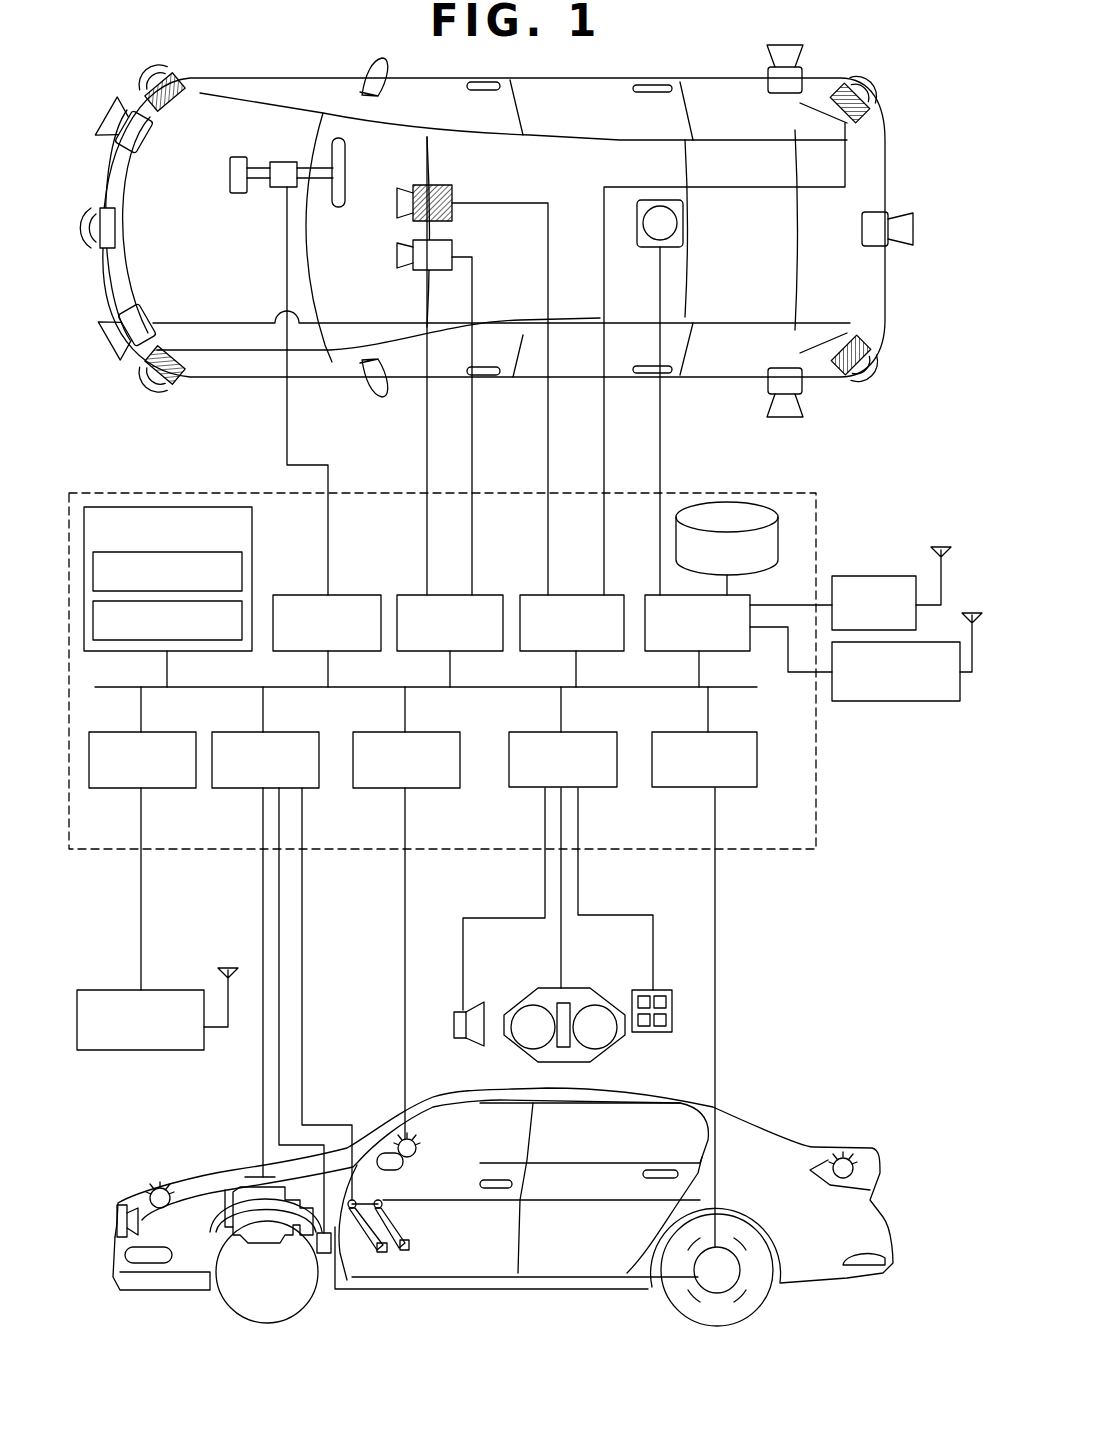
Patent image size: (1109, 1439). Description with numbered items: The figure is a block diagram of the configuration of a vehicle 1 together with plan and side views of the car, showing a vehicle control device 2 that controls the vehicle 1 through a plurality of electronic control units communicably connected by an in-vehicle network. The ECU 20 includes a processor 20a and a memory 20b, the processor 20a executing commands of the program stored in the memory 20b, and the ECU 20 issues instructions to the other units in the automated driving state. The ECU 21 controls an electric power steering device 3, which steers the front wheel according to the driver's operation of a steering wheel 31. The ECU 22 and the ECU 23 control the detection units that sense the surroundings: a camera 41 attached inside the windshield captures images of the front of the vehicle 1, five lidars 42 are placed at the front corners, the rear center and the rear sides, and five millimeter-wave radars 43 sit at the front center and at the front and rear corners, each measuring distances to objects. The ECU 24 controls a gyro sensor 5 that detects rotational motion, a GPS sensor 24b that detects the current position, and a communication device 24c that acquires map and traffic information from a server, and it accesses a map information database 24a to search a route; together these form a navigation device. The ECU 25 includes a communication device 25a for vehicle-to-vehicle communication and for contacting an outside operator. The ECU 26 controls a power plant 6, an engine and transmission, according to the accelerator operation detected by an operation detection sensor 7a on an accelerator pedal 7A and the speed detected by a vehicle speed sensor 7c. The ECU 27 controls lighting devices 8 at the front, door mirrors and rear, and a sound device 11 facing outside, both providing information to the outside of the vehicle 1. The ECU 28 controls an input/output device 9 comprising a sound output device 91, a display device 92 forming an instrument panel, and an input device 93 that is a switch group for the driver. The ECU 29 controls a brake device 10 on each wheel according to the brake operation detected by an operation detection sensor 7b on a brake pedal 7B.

The vehicle 1 is at (898, 143).
The vehicle control device 2 is at (806, 852).
The electric power steering device 3 is at (238, 196).
The gyro sensor 5 is at (683, 222).
The power plant 6 is at (234, 1187).
The operation detection sensor 7a is at (357, 1165).
The operation detection sensor 7b is at (380, 1203).
The vehicle speed sensor 7c is at (330, 1255).
The accelerator pedal 7A is at (380, 1252).
The brake pedal 7B is at (402, 1234).
The lighting devices 8 is at (150, 1190).
The input/output device 9 is at (488, 1063).
The brake device 10 is at (723, 1292).
The sound device 11 is at (117, 1214).
The ECU 20 is at (132, 505).
The processor 20a is at (242, 571).
The memory 20b is at (242, 620).
The ECU 21 is at (363, 594).
The ECU 22 is at (455, 594).
The ECU 23 is at (581, 594).
The ECU 24 is at (648, 594).
The map information database 24a is at (722, 500).
The GPS sensor 24b is at (890, 574).
The communication device 24c is at (887, 703).
The ECU 25 is at (172, 790).
The communication device 25a is at (140, 1052).
The ECU 26 is at (247, 790).
The ECU 27 is at (433, 790).
The ECU 28 is at (598, 789).
The ECU 29 is at (740, 789).
The steering wheel 31 is at (338, 210).
The camera 41 is at (455, 210).
The lidar 42 is at (155, 150).
The millimeter-wave radar 43 is at (175, 118).
The sound output device 91 is at (455, 1018).
The display device 92 is at (520, 1008).
The input device 93 is at (645, 1035).